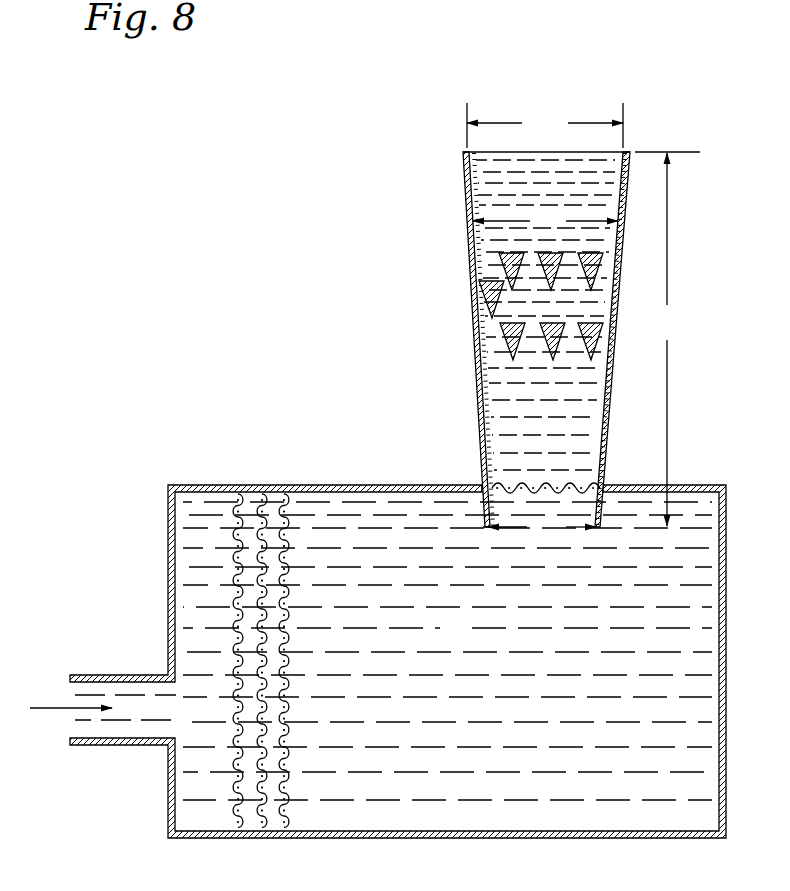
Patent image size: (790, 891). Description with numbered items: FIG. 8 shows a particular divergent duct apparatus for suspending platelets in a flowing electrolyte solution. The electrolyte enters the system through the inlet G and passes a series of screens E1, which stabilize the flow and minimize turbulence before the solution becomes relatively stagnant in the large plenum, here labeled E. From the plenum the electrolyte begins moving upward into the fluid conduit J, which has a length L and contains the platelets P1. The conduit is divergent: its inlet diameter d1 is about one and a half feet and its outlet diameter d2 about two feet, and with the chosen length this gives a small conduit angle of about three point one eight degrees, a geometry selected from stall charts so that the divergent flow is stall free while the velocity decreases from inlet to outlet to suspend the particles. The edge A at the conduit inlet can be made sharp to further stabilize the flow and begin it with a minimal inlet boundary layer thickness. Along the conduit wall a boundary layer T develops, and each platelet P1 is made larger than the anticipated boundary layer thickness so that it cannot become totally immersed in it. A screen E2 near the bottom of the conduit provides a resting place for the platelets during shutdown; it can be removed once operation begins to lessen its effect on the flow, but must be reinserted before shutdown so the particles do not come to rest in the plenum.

The boundary layer T is at (470, 205).
The fluid conduit J is at (478, 390).
The platelet P1 is at (486, 295).
The screen E2 is at (503, 480).
The edge A is at (487, 528).
The liquid in tank E is at (464, 645).
The screens E1 is at (284, 502).
The inlet G is at (146, 718).
The inlet diameter d1 is at (542, 532).
The outlet diameter d2 is at (545, 125).
The length L is at (667, 339).